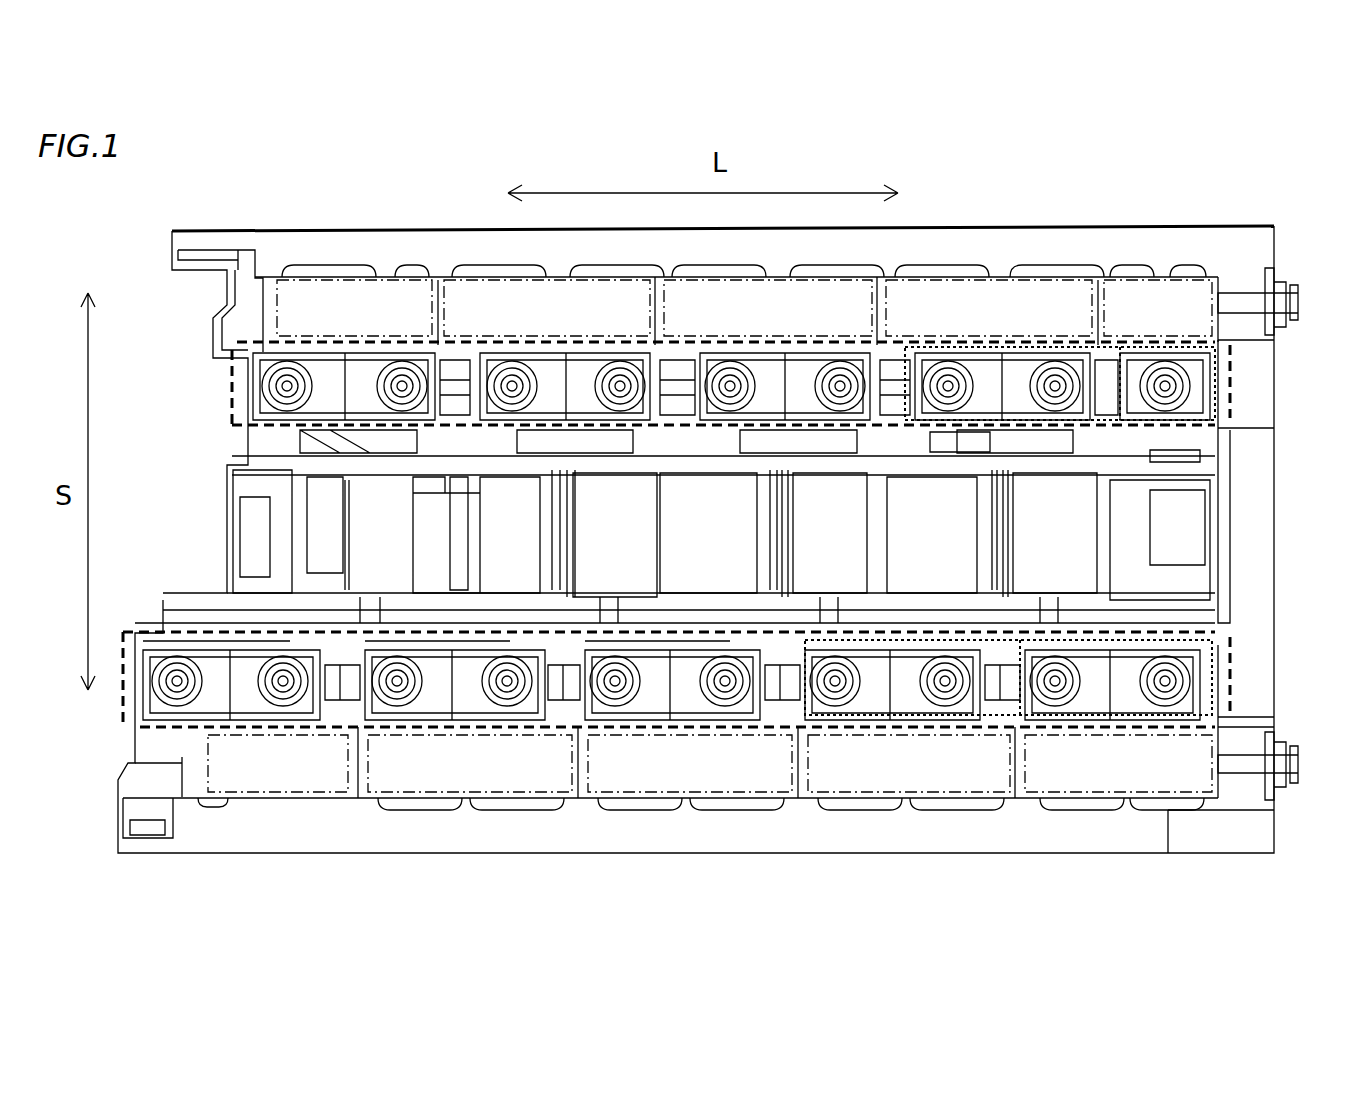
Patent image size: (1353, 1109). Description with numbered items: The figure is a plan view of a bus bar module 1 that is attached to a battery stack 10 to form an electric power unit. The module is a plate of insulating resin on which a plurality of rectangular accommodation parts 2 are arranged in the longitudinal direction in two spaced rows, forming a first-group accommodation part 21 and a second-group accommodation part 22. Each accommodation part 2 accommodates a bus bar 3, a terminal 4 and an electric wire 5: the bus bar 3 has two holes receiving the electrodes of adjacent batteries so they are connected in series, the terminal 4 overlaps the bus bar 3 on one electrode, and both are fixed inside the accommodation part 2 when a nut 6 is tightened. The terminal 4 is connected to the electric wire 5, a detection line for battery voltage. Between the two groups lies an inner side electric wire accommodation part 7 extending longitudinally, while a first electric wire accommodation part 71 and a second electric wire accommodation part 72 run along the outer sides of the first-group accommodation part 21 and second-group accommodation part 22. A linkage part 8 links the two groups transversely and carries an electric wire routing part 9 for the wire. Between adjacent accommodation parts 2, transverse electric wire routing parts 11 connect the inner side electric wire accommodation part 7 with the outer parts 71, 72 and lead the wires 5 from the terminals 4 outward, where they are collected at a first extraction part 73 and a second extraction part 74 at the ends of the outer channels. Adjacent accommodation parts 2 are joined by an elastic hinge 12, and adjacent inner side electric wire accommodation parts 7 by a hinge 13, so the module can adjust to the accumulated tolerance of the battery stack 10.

The bus bar module 1 is at (277, 787).
The accommodation part 2 is at (980, 370).
The bus bar 3 is at (560, 375).
The terminal 4 is at (512, 362).
The electric wire 5 is at (512, 570).
The nut 6 is at (700, 470).
The inner side electric wire accommodation part 7 is at (300, 462).
The linkage part 8 is at (312, 533).
The electric wire routing part 9 is at (348, 535).
The battery stack 10 is at (388, 853).
The electric wire routing part 11 is at (462, 333).
The hinge 12 is at (452, 385).
The hinge 13 is at (590, 597).
The first-group accommodation part 21 is at (1232, 360).
The second-group accommodation part 22 is at (1232, 645).
The first electric wire accommodation part 71 is at (1215, 272).
The second electric wire accommodation part 72 is at (1150, 805).
The first extraction part 73 is at (1298, 288).
The second extraction part 74 is at (1298, 783).